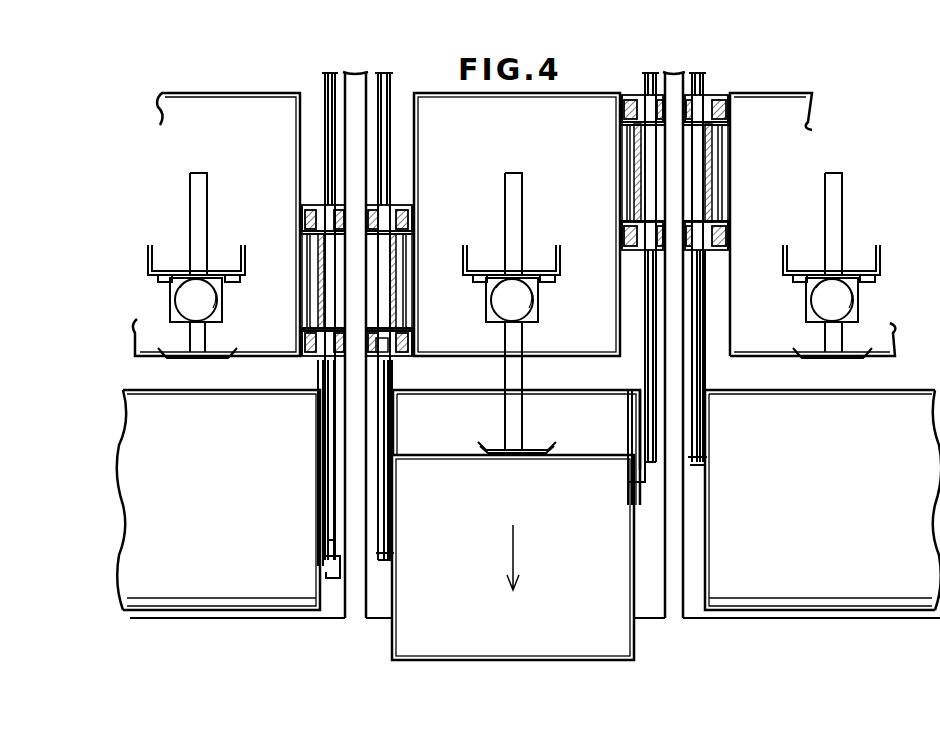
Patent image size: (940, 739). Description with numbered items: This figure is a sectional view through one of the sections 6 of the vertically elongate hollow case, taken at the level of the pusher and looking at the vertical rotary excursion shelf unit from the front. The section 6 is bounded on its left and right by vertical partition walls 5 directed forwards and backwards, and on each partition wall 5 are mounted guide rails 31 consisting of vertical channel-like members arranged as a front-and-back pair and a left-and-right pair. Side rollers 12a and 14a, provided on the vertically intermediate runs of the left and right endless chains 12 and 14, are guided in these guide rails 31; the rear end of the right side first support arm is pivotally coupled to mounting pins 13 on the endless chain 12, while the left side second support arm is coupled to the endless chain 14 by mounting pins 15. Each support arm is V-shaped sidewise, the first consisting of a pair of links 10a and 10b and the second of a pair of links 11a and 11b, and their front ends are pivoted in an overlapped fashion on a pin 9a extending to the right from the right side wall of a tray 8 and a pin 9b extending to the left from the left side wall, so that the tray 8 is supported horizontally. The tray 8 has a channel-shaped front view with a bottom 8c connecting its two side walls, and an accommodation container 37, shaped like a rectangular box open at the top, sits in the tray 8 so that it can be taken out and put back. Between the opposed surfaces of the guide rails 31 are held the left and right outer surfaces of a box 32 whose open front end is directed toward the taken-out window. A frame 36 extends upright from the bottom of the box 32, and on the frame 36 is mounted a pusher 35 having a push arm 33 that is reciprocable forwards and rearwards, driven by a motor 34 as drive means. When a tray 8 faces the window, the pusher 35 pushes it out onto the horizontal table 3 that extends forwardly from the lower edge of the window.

The horizontal table 3 is at (138, 621).
The vertical partition wall 5 is at (353, 608).
The section 6 is at (326, 608).
The tray 8 is at (246, 600).
The bottom 8c is at (582, 397).
The pin 9a is at (318, 547).
The pin 9b is at (386, 556).
The link 10a is at (322, 570).
The link 10b is at (318, 473).
The link 11a is at (380, 492).
The link 11b is at (400, 396).
The endless chain 12 is at (642, 98).
The side roller 12a is at (622, 123).
The mounting pin 13 is at (650, 246).
The endless chain 14 is at (302, 235).
The side roller 14a is at (314, 215).
The mounting pin 15 is at (384, 346).
The guide rail 31 is at (316, 327).
The box 32 is at (466, 97).
The push arm 33 is at (208, 343).
The motor 34 is at (202, 300).
The pusher 35 is at (170, 302).
The frame 36 is at (166, 246).
The accommodation container 37 is at (575, 660).